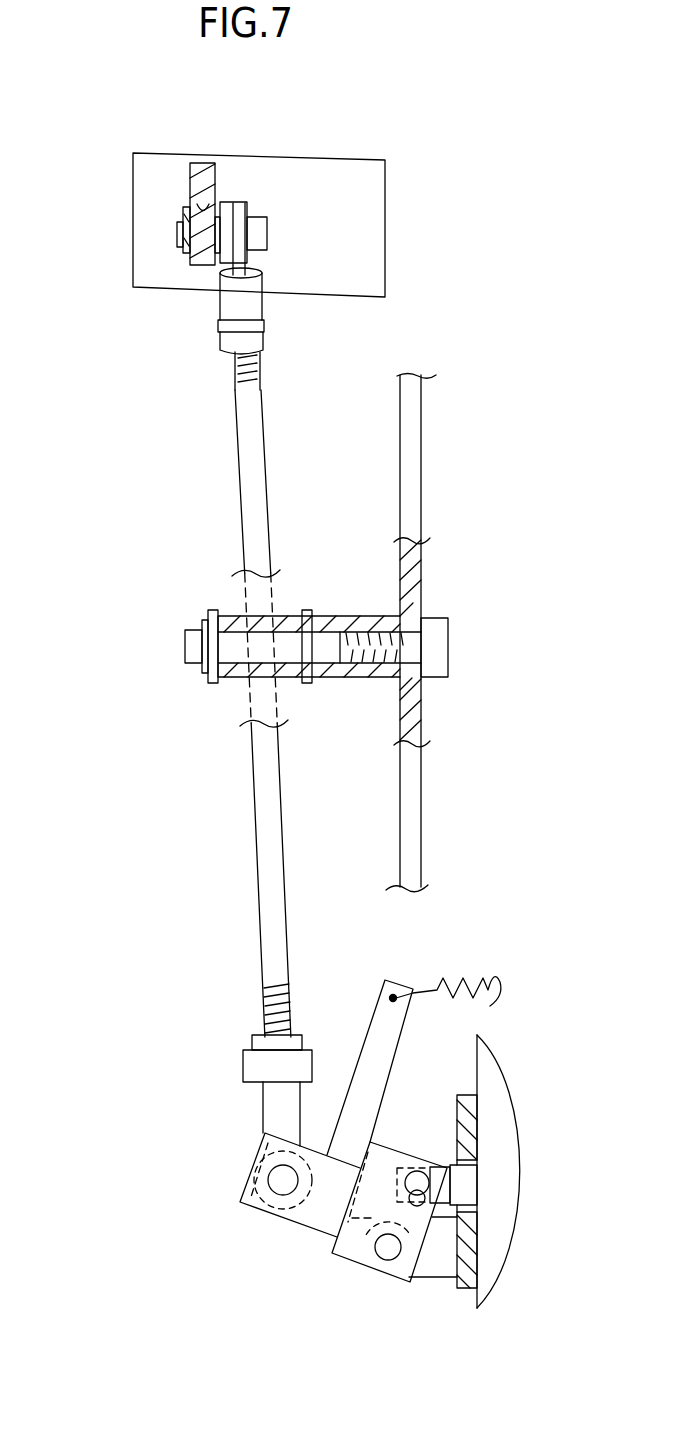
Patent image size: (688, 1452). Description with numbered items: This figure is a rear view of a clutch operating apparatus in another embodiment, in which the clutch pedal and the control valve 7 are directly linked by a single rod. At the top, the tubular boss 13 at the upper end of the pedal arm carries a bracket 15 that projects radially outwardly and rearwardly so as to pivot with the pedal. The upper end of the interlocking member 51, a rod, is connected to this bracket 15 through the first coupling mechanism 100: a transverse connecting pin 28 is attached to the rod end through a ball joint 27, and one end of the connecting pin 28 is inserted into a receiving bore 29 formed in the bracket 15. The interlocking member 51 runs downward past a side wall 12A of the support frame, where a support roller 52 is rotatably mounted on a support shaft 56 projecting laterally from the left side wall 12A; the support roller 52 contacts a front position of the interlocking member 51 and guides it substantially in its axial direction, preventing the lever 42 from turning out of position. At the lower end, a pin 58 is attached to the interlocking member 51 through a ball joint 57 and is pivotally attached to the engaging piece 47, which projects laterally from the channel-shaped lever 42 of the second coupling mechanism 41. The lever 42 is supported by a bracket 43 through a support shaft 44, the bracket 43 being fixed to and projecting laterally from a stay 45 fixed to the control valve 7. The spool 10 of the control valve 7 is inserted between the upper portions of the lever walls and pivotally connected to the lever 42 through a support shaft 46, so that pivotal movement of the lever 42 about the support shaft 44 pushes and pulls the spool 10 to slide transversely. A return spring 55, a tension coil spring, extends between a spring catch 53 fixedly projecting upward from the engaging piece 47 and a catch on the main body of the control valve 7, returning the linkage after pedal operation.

The first coupling mechanism 100 is at (159, 177).
The tubular boss 13 is at (328, 283).
The bracket 15 is at (192, 183).
The ball joint 27 is at (276, 193).
The connecting pin 28 is at (202, 235).
The receiving bore 29 is at (216, 216).
The interlocking member 51 is at (258, 475).
The side wall 12A is at (417, 478).
The support shaft 56 is at (288, 645).
The support roller 52 is at (237, 670).
The spring catch 53 is at (363, 1045).
The return spring 55 is at (472, 980).
The control valve 7 is at (478, 1064).
The second coupling mechanism 41 is at (217, 1213).
The engaging piece 47 is at (313, 1222).
The pin 58 is at (278, 1187).
The ball joint 57 is at (243, 1182).
The lever 42 is at (345, 1275).
The support shaft 44 is at (387, 1253).
The support shaft 46 is at (412, 1178).
The bracket 43 is at (430, 1262).
The stay 45 is at (467, 1095).
The spool 10 is at (447, 1167).